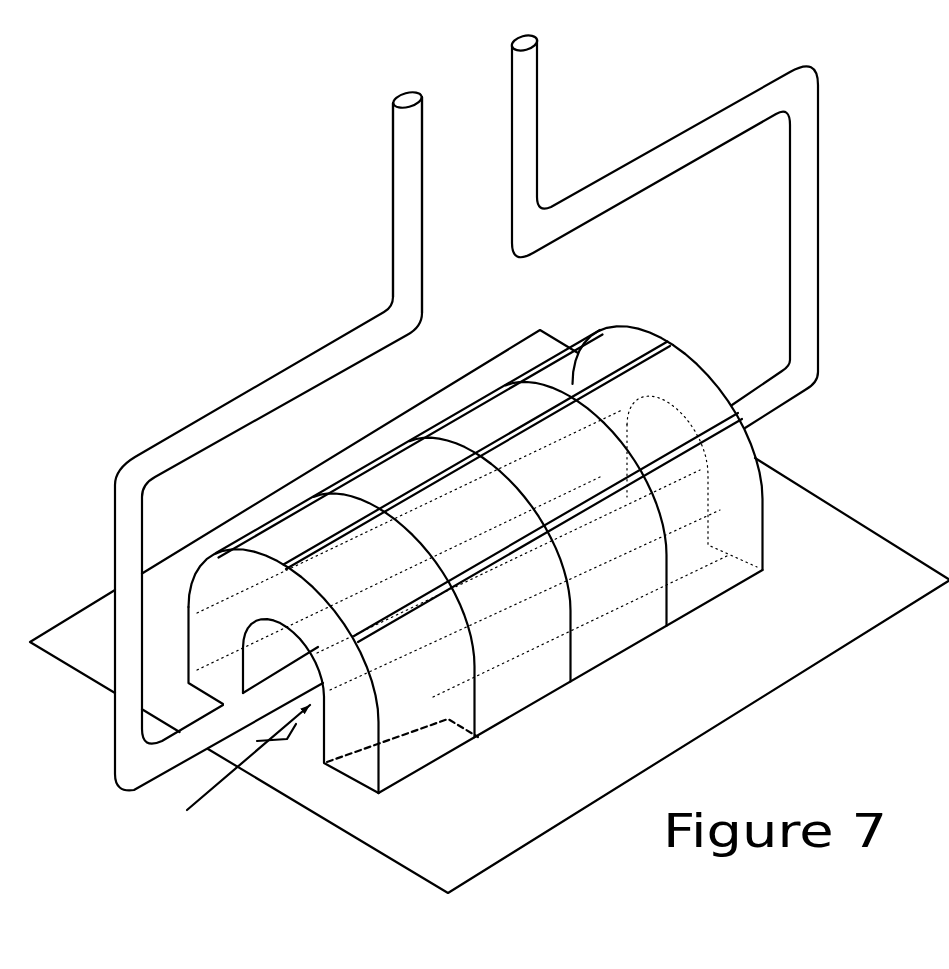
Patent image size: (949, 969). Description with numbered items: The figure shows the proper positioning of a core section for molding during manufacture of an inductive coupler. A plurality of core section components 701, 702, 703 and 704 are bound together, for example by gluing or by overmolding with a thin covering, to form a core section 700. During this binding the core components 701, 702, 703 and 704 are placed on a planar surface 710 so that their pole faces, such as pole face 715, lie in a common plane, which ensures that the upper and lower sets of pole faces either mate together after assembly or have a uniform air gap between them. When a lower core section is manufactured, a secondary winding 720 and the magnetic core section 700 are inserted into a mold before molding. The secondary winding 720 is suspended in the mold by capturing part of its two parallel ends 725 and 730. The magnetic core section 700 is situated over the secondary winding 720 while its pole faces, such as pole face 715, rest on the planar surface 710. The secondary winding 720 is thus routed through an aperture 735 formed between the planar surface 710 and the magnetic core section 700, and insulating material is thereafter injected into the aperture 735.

The core section 700 is at (772, 513).
The core section component 701 is at (447, 768).
The core section component 702 is at (529, 709).
The core section component 703 is at (621, 658).
The core section component 704 is at (708, 605).
The planar surface 710 is at (363, 842).
The pole face 715 is at (407, 742).
The secondary winding 720 is at (269, 439).
The parallel end 725 is at (392, 176).
The parallel end 730 is at (540, 123).
The aperture 735 is at (230, 780).